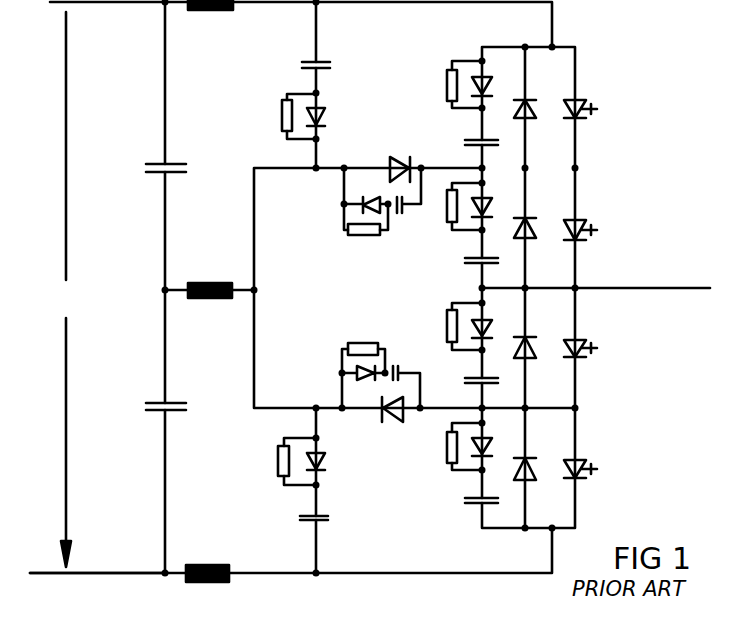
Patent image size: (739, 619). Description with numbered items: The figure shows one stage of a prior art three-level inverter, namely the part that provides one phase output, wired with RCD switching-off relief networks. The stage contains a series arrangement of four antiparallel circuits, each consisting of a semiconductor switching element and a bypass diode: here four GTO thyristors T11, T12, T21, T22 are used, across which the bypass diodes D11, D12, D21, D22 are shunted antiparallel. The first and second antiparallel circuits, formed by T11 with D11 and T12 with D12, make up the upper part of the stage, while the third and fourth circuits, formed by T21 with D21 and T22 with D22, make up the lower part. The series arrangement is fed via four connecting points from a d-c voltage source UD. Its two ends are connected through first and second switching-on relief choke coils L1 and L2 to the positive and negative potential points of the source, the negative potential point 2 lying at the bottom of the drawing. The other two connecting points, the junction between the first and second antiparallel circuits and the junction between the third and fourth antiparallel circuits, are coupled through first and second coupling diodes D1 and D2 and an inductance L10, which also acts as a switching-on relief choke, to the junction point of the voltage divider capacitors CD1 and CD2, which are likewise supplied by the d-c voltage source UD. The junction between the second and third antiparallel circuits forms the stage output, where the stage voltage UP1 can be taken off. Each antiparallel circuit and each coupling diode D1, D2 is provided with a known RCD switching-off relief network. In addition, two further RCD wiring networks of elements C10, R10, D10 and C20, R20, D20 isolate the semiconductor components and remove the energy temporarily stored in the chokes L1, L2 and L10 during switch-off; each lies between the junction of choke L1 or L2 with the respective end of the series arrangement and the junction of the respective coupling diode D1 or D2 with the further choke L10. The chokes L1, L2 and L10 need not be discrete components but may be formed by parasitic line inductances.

The first switching-on relief choke coil L1 is at (222, 10).
The second switching-on relief choke coil L2 is at (224, 566).
The inductance serving as switching-on relief choke coil L10 is at (197, 284).
The voltage divider capacitor CD1 is at (174, 164).
The voltage divider capacitor CD2 is at (180, 406).
The d-c voltage source UD is at (70, 289).
The stage voltage UP1 is at (652, 289).
The capacitor of RCD wiring network C10 is at (323, 62).
The capacitor of RCD wiring network C20 is at (323, 516).
The resistor of RCD wiring network R10 is at (282, 118).
The resistor of RCD wiring network R20 is at (278, 458).
The diode of RCD wiring network D10 is at (327, 118).
The diode of RCD wiring network D20 is at (327, 458).
The first coupling diode D1 is at (391, 156).
The second coupling diode D2 is at (390, 423).
The bypass diode D11 is at (532, 227).
The bypass diode D12 is at (532, 110).
The bypass diode D21 is at (532, 347).
The bypass diode D22 is at (532, 469).
The GTO thyristor T11 is at (582, 222).
The GTO thyristor T12 is at (582, 106).
The GTO thyristor T21 is at (582, 342).
The GTO thyristor T22 is at (582, 464).
The negative potential point 2 is at (93, 580).